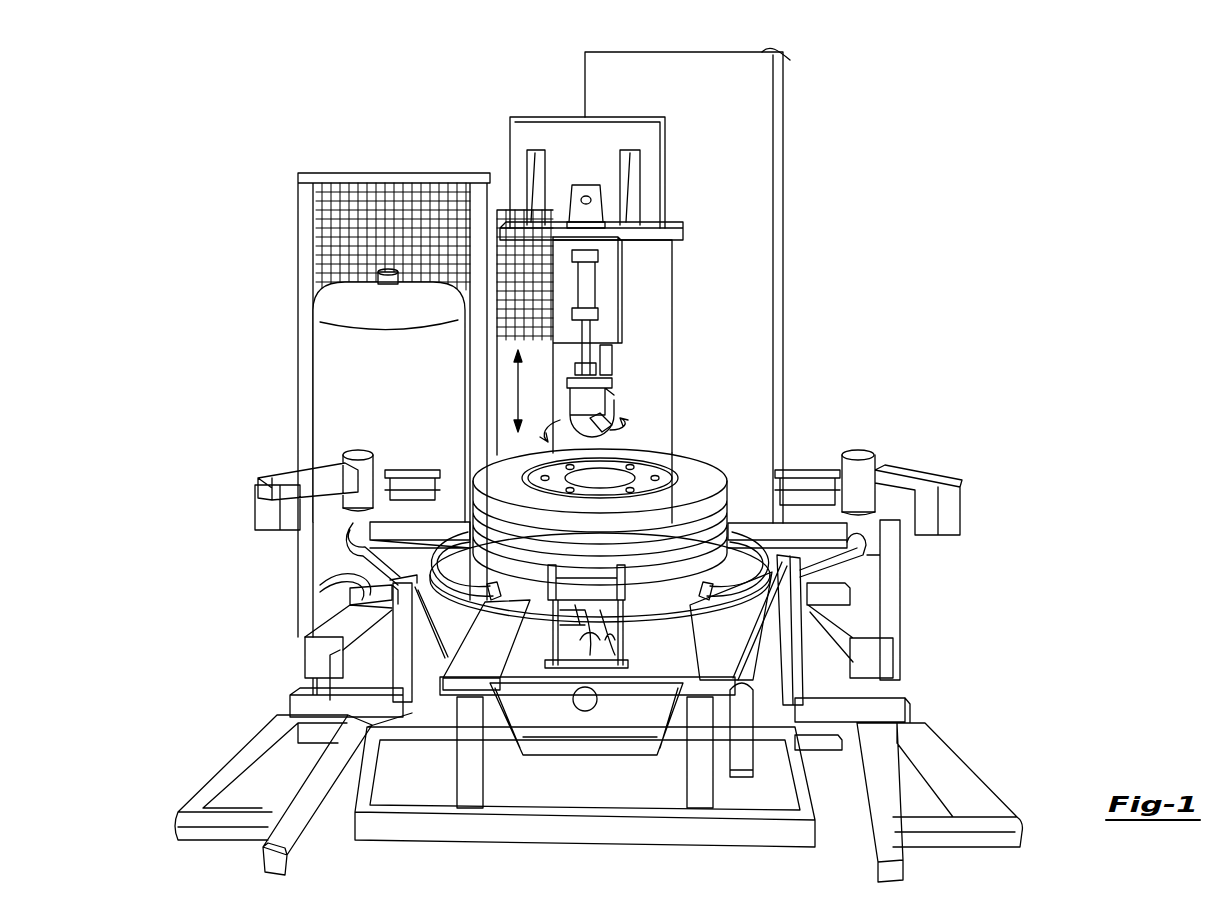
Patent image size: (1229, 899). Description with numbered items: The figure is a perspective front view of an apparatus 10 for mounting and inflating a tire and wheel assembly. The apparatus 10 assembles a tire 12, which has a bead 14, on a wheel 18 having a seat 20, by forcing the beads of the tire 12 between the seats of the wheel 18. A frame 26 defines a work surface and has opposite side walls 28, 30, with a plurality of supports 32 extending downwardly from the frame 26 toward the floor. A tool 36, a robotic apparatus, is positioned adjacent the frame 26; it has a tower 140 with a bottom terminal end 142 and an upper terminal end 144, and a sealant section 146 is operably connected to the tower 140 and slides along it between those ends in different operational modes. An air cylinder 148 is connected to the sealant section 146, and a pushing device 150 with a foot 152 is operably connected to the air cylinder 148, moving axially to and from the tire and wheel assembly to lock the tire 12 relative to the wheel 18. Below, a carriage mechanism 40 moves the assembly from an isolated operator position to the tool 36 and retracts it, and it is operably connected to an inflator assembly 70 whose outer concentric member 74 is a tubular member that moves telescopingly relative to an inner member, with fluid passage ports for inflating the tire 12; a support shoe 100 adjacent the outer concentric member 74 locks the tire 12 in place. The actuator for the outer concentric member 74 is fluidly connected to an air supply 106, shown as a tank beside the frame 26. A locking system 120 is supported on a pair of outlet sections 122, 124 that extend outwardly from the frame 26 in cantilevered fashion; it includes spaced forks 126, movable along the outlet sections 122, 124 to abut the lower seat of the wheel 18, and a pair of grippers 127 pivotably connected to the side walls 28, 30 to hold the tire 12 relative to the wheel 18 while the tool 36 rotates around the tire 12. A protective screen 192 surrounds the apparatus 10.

The apparatus 10 is at (335, 128).
The tire 12 is at (734, 482).
The bead 14 is at (592, 498).
The wheel 18 is at (560, 462).
The seat 20 is at (505, 478).
The frame 26 is at (481, 646).
The side wall 28 is at (445, 652).
The side wall 30 is at (712, 670).
The supports 32 is at (305, 828).
The tool 36 is at (730, 285).
The carriage mechanism 40 is at (622, 722).
The inflator assembly 70 is at (758, 498).
The outer concentric member 74 is at (507, 598).
The support shoe 100 is at (586, 619).
The air supply 106 is at (328, 352).
The locking system 120 is at (608, 452).
The outlet section 122 is at (868, 592).
The outlet section 124 is at (356, 578).
The spaced forks 126 is at (393, 470).
The grippers 127 is at (310, 473).
The tower 140 is at (775, 122).
The bottom terminal end 142 is at (783, 470).
The upper terminal end 144 is at (783, 55).
The sealant section 146 is at (537, 104).
The air cylinder 148 is at (588, 283).
The pushing device 150 is at (572, 405).
The foot 152 is at (600, 425).
The protective screen 192 is at (413, 188).